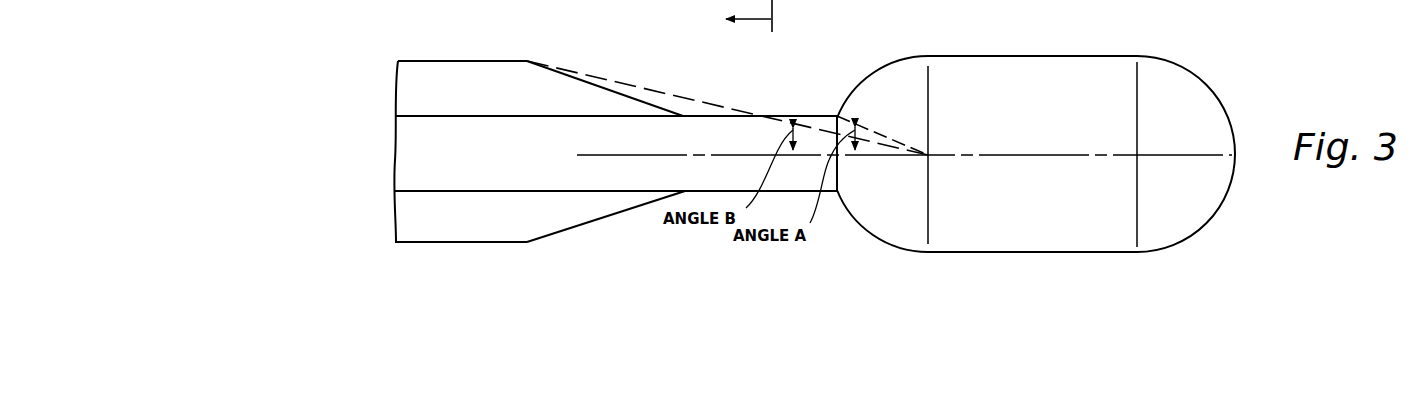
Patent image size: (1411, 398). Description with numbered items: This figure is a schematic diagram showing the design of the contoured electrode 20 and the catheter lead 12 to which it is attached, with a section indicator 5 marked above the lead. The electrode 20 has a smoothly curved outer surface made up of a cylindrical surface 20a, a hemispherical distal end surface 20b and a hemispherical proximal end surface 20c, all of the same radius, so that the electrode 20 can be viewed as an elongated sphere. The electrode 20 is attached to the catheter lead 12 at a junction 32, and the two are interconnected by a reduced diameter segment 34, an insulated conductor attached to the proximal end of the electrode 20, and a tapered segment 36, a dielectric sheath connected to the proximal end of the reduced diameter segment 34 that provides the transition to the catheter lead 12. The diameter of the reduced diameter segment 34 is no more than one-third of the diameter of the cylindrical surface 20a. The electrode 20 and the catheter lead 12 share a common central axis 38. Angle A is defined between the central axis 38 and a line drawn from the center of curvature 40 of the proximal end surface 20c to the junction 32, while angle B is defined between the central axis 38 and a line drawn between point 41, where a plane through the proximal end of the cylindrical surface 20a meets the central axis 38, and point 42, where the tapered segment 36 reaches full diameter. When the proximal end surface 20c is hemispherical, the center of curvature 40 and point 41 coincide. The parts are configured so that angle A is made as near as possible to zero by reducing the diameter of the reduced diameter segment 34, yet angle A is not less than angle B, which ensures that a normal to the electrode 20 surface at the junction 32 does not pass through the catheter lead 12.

The section line for FIG. 5 is at (735, 17).
The catheter lead 12 is at (496, 243).
The electrode 20 is at (1054, 150).
The cylindrical surface 20a is at (1057, 255).
The hemispherical distal end surface 20b is at (1213, 88).
The hemispherical proximal end surface 20c is at (871, 78).
The junction 32 is at (837, 115).
The reduced diameter segment 34 is at (793, 115).
The tapered segment 36 is at (608, 216).
The central axis 38 is at (988, 152).
The center of curvature 40 is at (904, 158).
The point 41 is at (929, 158).
The point 42 is at (527, 61).